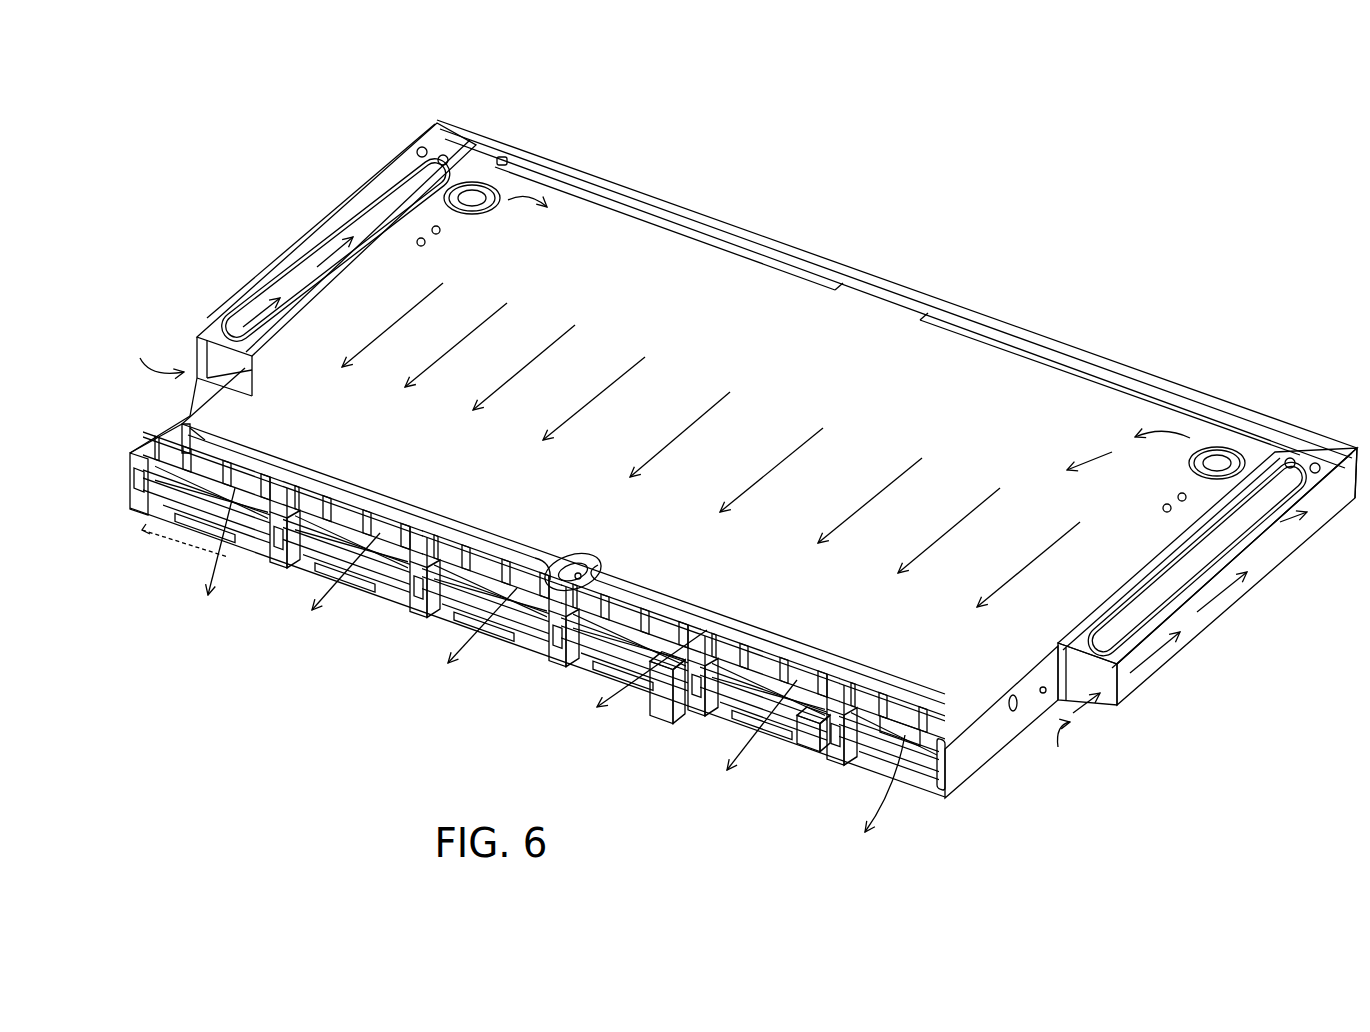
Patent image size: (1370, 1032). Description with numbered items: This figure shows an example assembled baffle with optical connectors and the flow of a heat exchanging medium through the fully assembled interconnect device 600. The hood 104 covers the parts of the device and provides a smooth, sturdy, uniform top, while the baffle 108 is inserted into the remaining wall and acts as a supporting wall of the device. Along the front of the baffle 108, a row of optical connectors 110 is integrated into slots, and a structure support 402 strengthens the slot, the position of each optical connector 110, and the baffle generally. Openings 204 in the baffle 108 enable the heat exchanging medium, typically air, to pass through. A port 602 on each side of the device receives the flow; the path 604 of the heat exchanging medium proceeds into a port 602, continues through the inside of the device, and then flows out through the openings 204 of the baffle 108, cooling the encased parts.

The hood 104 is at (888, 300).
The baffle 108 is at (200, 450).
The optical connector 110 is at (131, 520).
The openings 204 is at (485, 568).
The structure support 402 is at (173, 553).
The server chassis assembly 600 is at (508, 813).
The port 602 is at (198, 340).
The path 604 is at (132, 352).